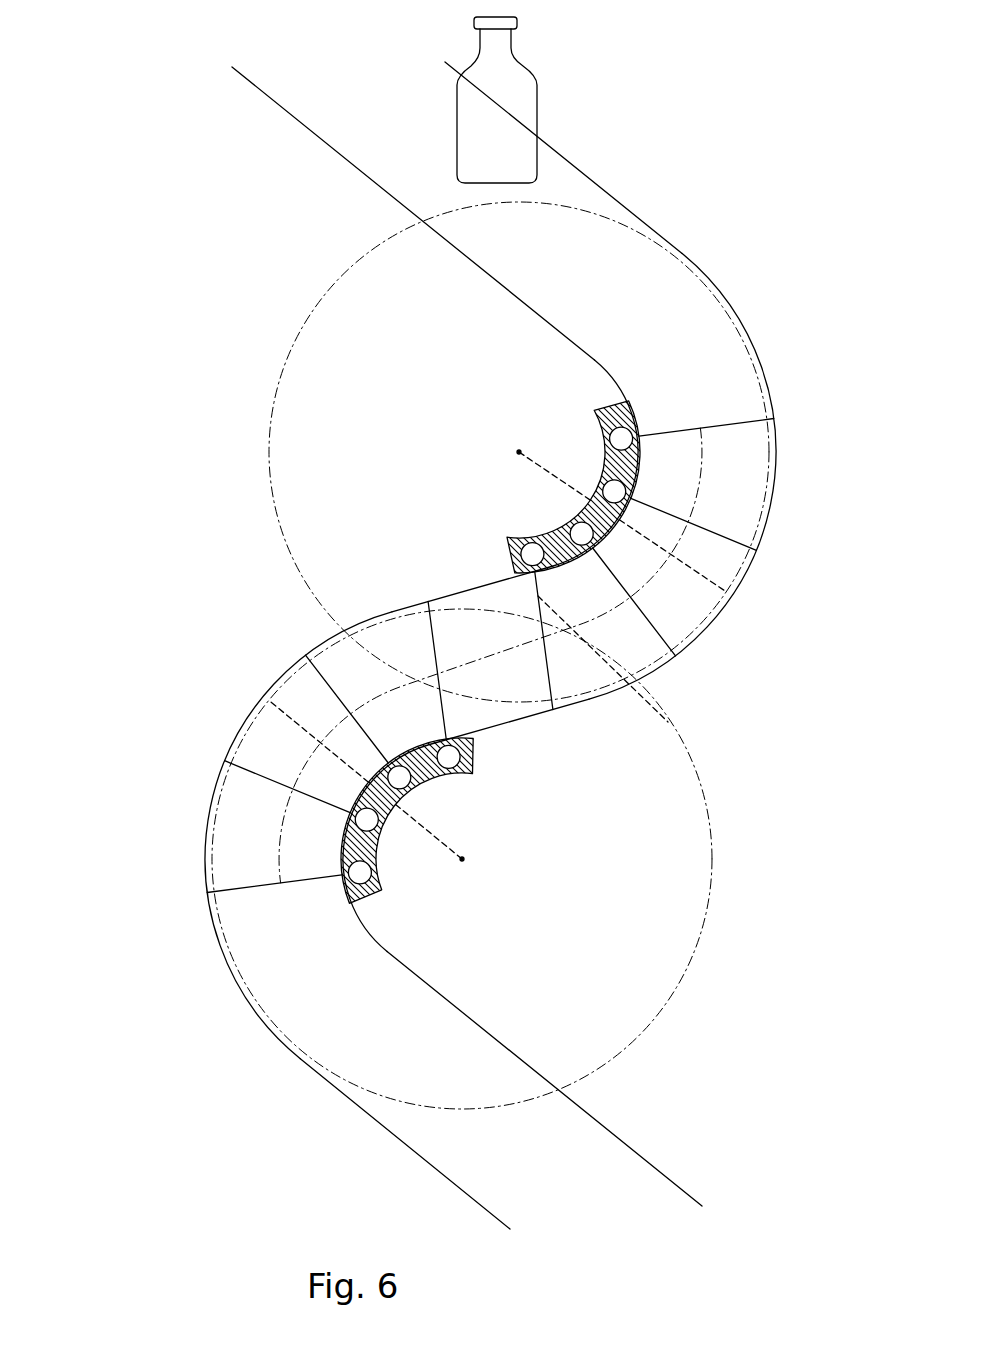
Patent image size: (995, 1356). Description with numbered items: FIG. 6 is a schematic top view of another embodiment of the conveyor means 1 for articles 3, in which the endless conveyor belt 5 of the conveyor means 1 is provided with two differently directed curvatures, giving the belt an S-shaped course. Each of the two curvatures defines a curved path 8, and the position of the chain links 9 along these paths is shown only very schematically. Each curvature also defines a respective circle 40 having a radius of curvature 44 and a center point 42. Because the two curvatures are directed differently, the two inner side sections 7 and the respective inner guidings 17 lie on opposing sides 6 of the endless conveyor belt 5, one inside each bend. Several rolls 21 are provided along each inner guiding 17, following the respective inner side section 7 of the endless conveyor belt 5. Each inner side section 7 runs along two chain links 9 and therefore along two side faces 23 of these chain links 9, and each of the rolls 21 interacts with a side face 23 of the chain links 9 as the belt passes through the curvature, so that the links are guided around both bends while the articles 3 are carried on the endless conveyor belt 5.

The conveyor means 1 is at (133, 182).
The articles 3 is at (505, 123).
The endless conveyor belt 5 is at (521, 1170).
The opposing sides 6 is at (375, 1120).
The inner side section 7 is at (640, 469).
The curved path 8 is at (700, 460).
The chain links 9 is at (733, 510).
The inner guiding 17 is at (606, 402).
The rolls 21 is at (610, 439).
The side faces 23 is at (640, 437).
The circle 40 is at (277, 402).
The center point 42 is at (519, 452).
The radius of curvature 44 is at (710, 582).